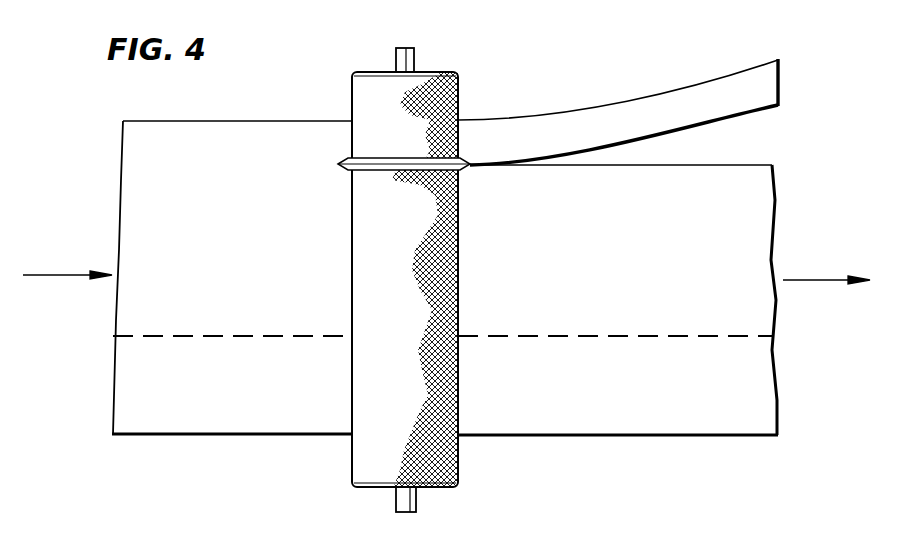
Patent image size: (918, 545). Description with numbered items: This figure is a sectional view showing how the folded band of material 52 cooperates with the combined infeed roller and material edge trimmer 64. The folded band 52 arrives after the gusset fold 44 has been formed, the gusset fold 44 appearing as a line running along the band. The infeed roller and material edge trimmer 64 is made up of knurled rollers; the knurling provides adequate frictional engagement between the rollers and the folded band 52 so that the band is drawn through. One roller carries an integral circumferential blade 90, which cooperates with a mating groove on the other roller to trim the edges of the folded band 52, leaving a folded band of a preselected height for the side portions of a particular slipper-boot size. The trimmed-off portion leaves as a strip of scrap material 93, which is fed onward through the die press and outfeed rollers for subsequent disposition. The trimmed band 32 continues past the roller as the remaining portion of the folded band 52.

The incoming laminated web 52 is at (271, 148).
The base web 32 is at (751, 150).
The separated cover layer 93 is at (688, 101).
The roller 64 is at (445, 96).
The circumferential scoring rib 90 is at (345, 170).
The longitudinal score line 44 is at (637, 336).